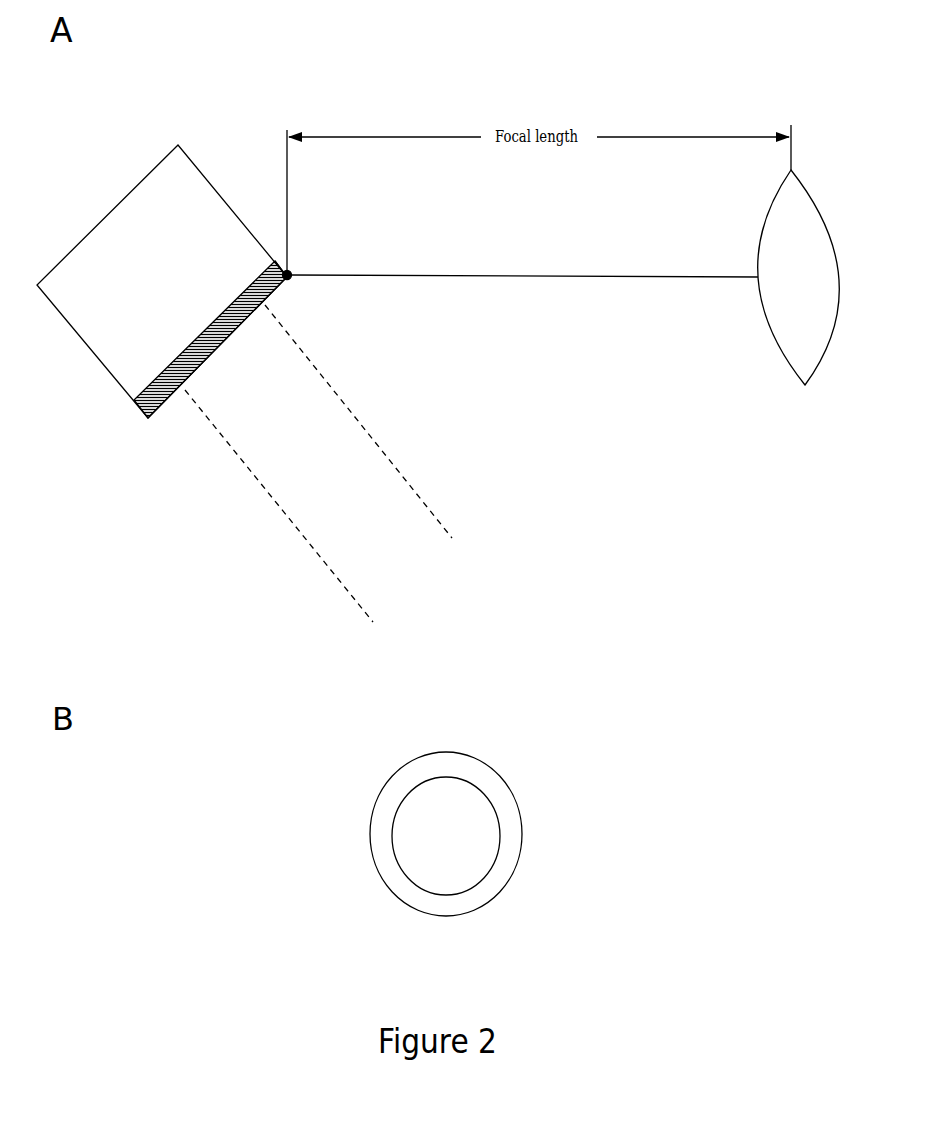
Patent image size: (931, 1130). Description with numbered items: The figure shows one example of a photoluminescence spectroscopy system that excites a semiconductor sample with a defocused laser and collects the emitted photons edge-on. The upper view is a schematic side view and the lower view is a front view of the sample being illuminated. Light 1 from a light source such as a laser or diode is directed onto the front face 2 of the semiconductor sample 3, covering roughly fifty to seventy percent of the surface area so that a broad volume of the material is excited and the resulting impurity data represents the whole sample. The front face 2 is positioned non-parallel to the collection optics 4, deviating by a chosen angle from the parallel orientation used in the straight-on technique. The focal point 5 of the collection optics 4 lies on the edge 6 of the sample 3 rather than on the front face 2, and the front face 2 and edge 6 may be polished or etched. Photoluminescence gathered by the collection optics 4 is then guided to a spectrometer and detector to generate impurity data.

The light 1 is at (376, 591).
The front face 2 is at (172, 404).
The semiconductor sample 3 is at (137, 411).
The collection optics 4 is at (799, 277).
The focal point 5 is at (292, 265).
The edge 6 is at (297, 283).